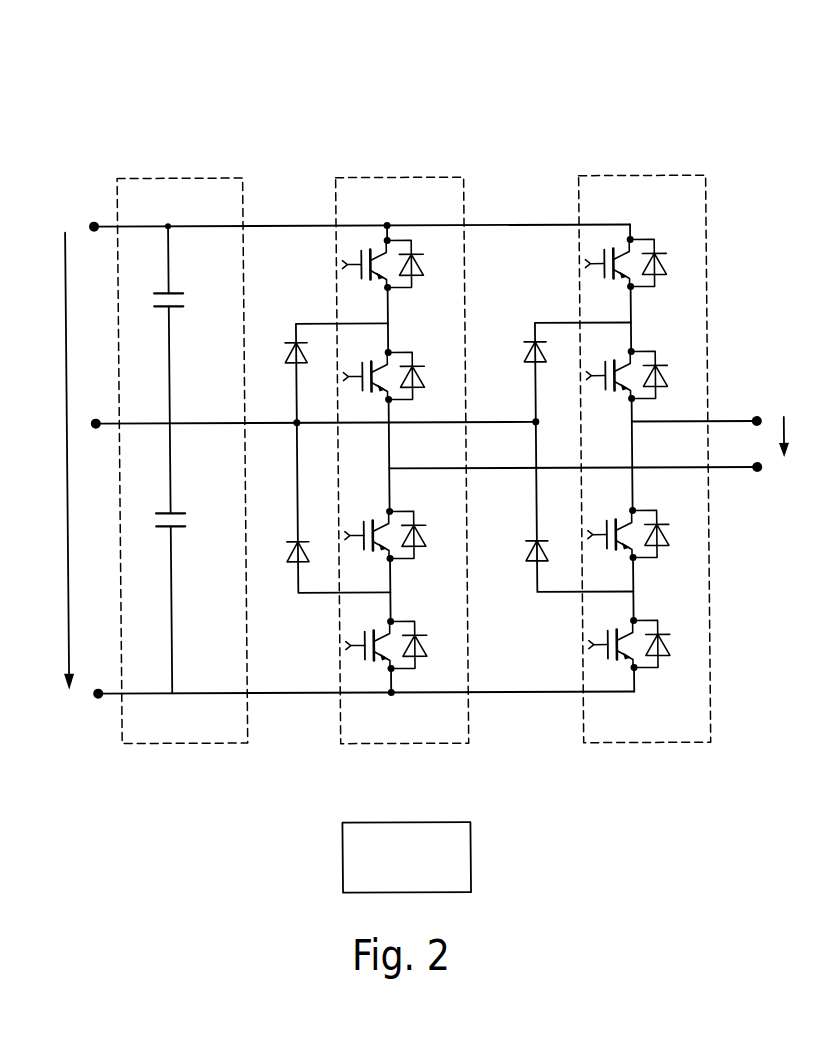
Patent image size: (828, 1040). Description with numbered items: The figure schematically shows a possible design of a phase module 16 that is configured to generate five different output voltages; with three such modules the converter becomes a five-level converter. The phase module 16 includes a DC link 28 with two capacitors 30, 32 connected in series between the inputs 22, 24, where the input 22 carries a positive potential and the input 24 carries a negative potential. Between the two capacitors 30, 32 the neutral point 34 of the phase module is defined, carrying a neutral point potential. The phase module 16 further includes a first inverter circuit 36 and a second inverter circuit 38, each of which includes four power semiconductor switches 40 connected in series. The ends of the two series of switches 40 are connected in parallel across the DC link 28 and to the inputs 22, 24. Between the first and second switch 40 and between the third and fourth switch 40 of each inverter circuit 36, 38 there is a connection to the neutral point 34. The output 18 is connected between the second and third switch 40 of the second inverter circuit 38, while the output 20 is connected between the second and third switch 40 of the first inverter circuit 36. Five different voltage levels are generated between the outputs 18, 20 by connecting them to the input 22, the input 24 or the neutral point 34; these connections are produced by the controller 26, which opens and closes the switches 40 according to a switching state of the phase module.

The phase module 16 is at (127, 83).
The output 18 is at (740, 421).
The output 20 is at (740, 472).
The input 22 is at (110, 225).
The input 24 is at (102, 697).
The controller 26 is at (463, 855).
The DC link 28 is at (158, 178).
The capacitor 30 is at (190, 300).
The capacitor 32 is at (190, 517).
The neutral point 34 is at (188, 414).
The first inverter circuit 36 is at (377, 177).
The second inverter circuit 38 is at (620, 176).
The power semiconductor switch 40 is at (550, 453).